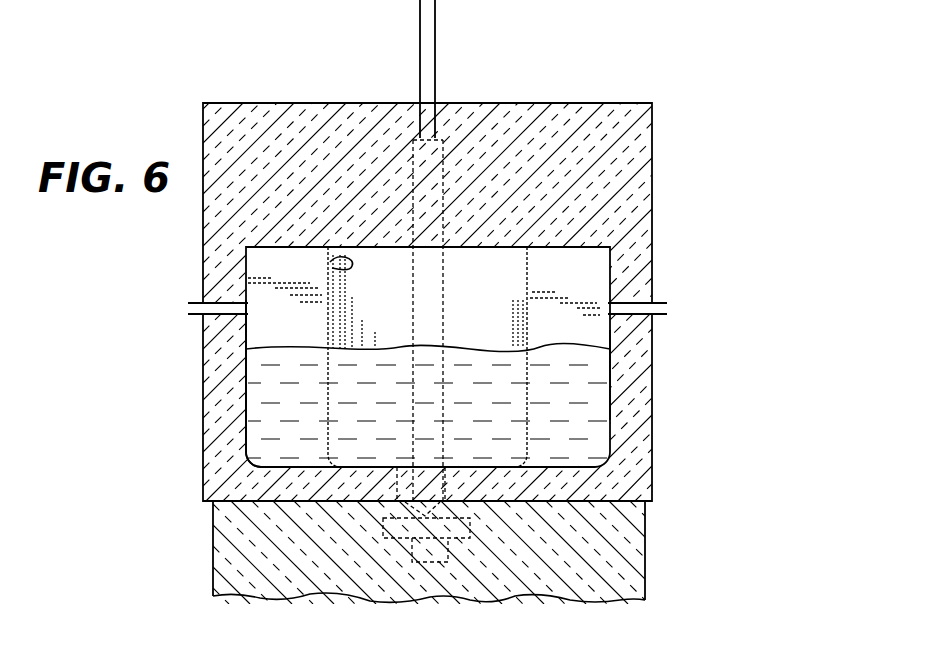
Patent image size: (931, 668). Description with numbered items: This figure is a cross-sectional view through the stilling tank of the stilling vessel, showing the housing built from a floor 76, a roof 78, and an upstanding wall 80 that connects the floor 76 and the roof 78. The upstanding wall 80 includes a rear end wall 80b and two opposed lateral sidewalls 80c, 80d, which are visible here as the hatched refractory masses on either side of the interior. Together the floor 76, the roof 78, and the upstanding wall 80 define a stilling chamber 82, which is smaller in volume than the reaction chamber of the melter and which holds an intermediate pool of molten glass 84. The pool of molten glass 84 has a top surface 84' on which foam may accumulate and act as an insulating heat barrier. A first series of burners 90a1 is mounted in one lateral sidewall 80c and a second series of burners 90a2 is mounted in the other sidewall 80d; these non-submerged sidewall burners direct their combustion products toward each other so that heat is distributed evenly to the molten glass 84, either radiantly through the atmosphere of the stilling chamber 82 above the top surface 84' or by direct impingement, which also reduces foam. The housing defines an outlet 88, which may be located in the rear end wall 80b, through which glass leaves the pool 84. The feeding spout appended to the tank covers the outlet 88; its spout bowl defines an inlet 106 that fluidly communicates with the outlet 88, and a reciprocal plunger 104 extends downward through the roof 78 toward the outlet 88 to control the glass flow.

The floor 76 is at (590, 487).
The roof 78 is at (505, 143).
The upstanding wall 80 is at (222, 286).
The rear end wall 80b is at (305, 339).
The lateral sidewall 80c is at (221, 374).
The lateral sidewall 80d is at (636, 373).
The stilling chamber 82 is at (262, 399).
The intermediate pool of molten glass 84 is at (427, 411).
The top surface of the intermediate pool of molten glass 84' is at (428, 330).
The outlet 88 is at (513, 301).
The first series of burners 90a1 is at (214, 318).
The second series of burners 90a2 is at (636, 318).
The reciprocal plunger 104 is at (443, 262).
The inlet of the spout bowl 106 is at (330, 268).